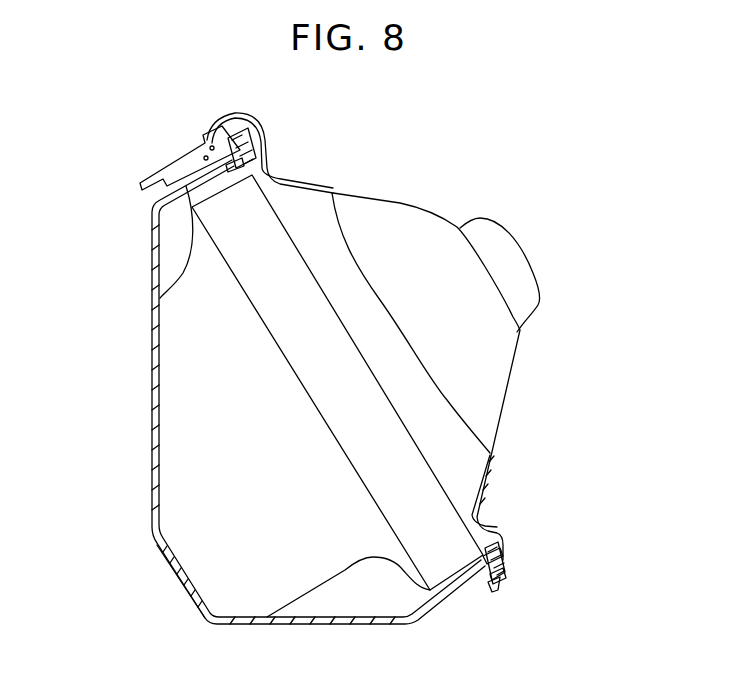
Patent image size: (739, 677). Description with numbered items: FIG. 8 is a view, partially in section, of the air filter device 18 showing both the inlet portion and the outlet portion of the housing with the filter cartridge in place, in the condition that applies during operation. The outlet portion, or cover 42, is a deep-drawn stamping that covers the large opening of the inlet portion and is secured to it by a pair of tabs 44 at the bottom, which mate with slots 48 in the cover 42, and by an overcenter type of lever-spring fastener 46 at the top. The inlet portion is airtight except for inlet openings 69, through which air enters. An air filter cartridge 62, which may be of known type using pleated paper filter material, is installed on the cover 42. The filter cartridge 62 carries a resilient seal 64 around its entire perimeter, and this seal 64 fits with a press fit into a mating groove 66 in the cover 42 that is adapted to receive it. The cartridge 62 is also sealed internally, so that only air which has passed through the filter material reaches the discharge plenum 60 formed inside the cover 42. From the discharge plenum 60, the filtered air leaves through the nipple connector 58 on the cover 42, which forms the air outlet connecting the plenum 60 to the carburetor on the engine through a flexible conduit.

The air filter device 18 is at (147, 366).
The cover 42 is at (403, 188).
The tabs 44 is at (500, 580).
The lever-spring fastener 46 is at (187, 163).
The slots 48 is at (494, 592).
The nipple connector 58 is at (505, 245).
The discharge plenum 60 is at (307, 212).
The air filter cartridge 62 is at (298, 337).
The resilient seal 64 is at (267, 155).
The mating groove 66 is at (503, 557).
The inlet openings 69 is at (170, 568).